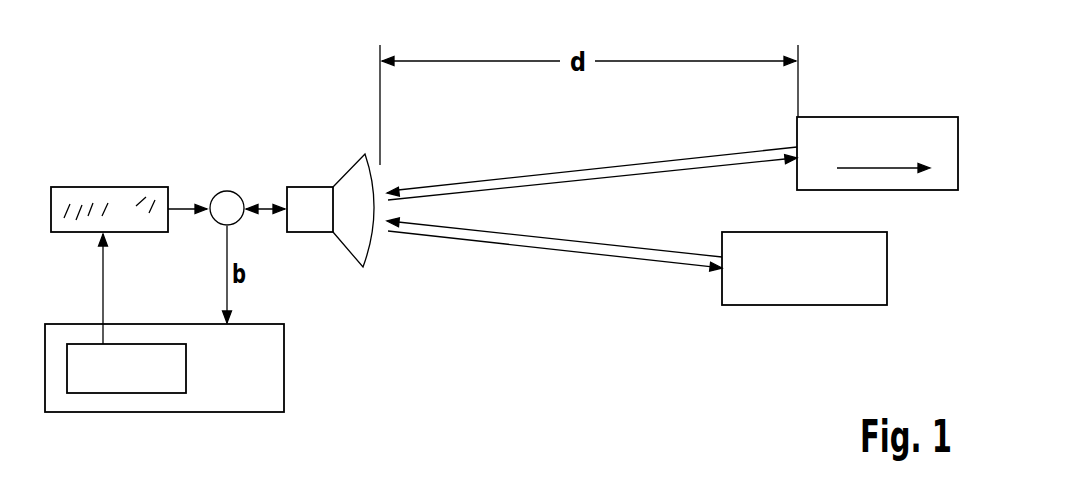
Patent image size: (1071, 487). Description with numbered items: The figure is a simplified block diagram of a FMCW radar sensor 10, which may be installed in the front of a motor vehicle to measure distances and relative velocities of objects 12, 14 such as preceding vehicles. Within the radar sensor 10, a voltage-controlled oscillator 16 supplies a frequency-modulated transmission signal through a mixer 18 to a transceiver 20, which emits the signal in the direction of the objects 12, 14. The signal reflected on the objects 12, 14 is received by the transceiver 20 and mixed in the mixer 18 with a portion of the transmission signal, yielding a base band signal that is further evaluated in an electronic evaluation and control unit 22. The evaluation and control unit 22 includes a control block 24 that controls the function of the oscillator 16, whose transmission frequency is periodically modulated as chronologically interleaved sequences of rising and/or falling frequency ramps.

The FMCW radar sensor 10 is at (245, 86).
The object 12 is at (915, 117).
The object 14 is at (760, 305).
The voltage-controlled oscillator 16 is at (138, 205).
The mixer 18 is at (229, 191).
The transceiver 20 is at (303, 187).
The electronic evaluation and control unit 22 is at (284, 345).
The control block 24 is at (187, 372).